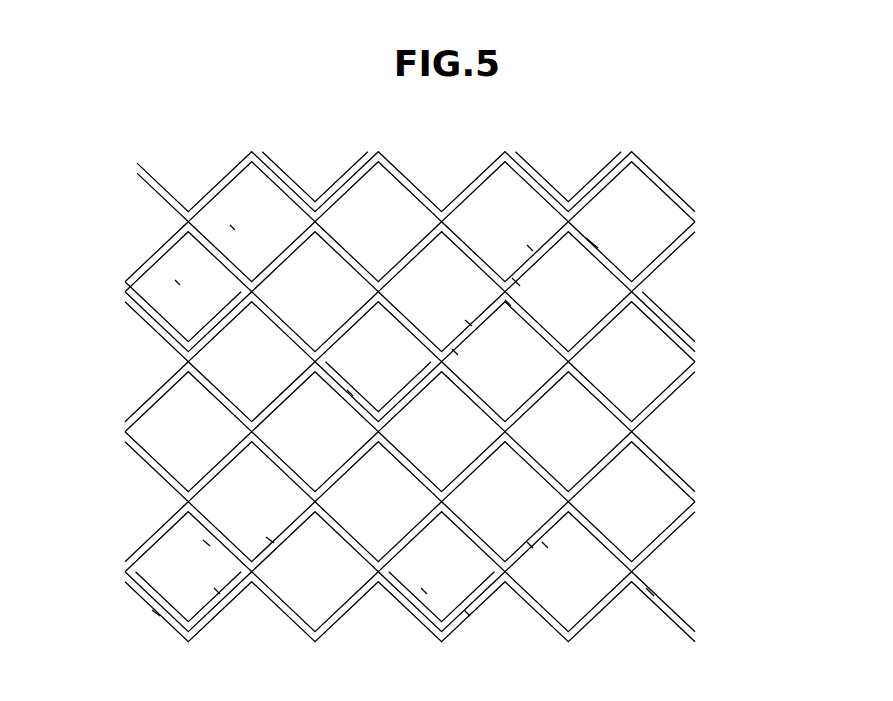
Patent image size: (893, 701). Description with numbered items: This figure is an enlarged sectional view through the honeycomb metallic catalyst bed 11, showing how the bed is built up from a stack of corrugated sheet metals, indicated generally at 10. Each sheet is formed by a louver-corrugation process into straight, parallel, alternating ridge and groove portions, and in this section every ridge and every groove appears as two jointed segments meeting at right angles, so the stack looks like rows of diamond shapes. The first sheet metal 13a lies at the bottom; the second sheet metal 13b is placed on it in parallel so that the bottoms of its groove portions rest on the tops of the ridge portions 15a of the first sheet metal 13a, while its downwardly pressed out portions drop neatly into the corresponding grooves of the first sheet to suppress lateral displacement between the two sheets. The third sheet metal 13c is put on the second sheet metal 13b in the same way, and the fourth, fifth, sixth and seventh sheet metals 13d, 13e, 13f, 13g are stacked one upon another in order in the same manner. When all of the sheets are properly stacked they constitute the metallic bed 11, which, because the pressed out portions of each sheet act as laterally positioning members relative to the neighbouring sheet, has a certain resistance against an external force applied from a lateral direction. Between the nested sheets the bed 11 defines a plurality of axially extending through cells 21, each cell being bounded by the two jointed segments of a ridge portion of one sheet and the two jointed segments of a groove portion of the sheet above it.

The lattice structure 10 is at (680, 126).
The honeycomb metallic bed 11 is at (190, 152).
The first sheet metal 13a is at (681, 613).
The second sheet metal 13b is at (676, 541).
The third sheet metal 13c is at (672, 467).
The fourth sheet metal 13d is at (672, 404).
The fifth sheet metal 13e is at (680, 327).
The sixth sheet metal 13f is at (676, 264).
The seventh sheet metal 13g is at (672, 183).
The ridge portions of the first sheet metal 15a is at (650, 592).
The through cell 21 is at (232, 225).